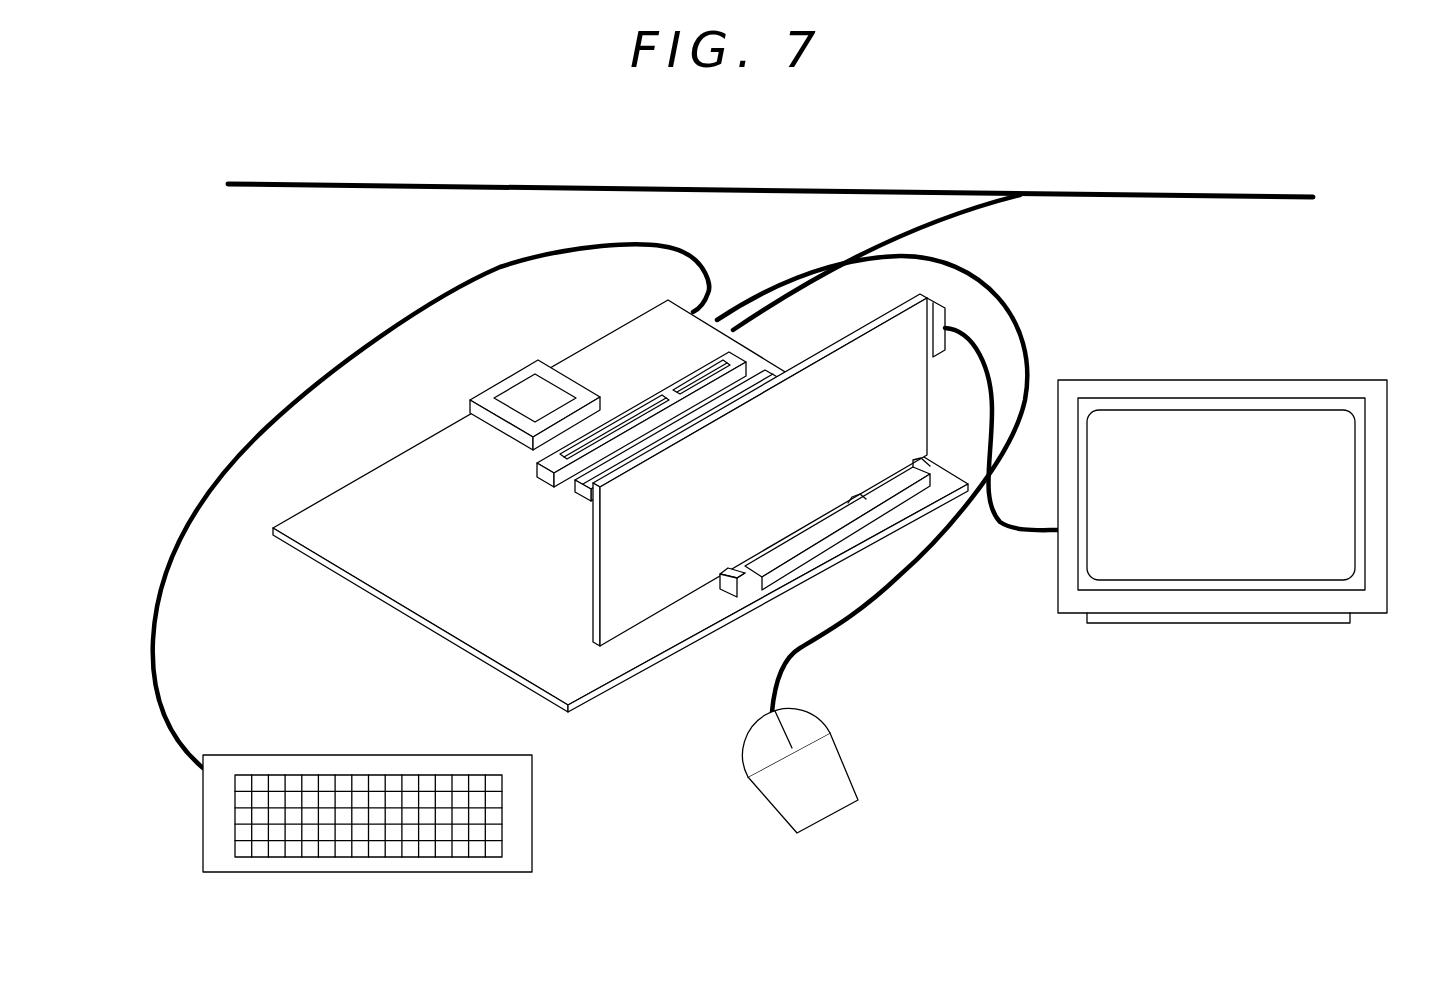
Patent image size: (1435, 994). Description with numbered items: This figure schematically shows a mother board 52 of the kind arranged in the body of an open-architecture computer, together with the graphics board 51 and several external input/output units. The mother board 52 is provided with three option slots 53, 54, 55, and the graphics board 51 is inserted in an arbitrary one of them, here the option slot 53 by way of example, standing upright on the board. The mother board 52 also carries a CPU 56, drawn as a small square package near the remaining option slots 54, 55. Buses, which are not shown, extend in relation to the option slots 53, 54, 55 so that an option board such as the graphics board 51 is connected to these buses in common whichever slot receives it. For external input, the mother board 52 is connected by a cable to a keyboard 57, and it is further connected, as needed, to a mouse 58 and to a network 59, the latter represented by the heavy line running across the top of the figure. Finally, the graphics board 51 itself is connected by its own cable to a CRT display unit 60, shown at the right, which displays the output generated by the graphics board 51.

The graphics board 51 is at (627, 610).
The mother board 52 is at (337, 573).
The option slot 53 is at (758, 603).
The option slot 54 is at (670, 430).
The option slot 55 is at (620, 420).
The CPU 56 is at (472, 397).
The keyboard 57 is at (522, 813).
The mouse 58 is at (842, 790).
The network 59 is at (1162, 190).
The CRT display unit 60 is at (1287, 380).